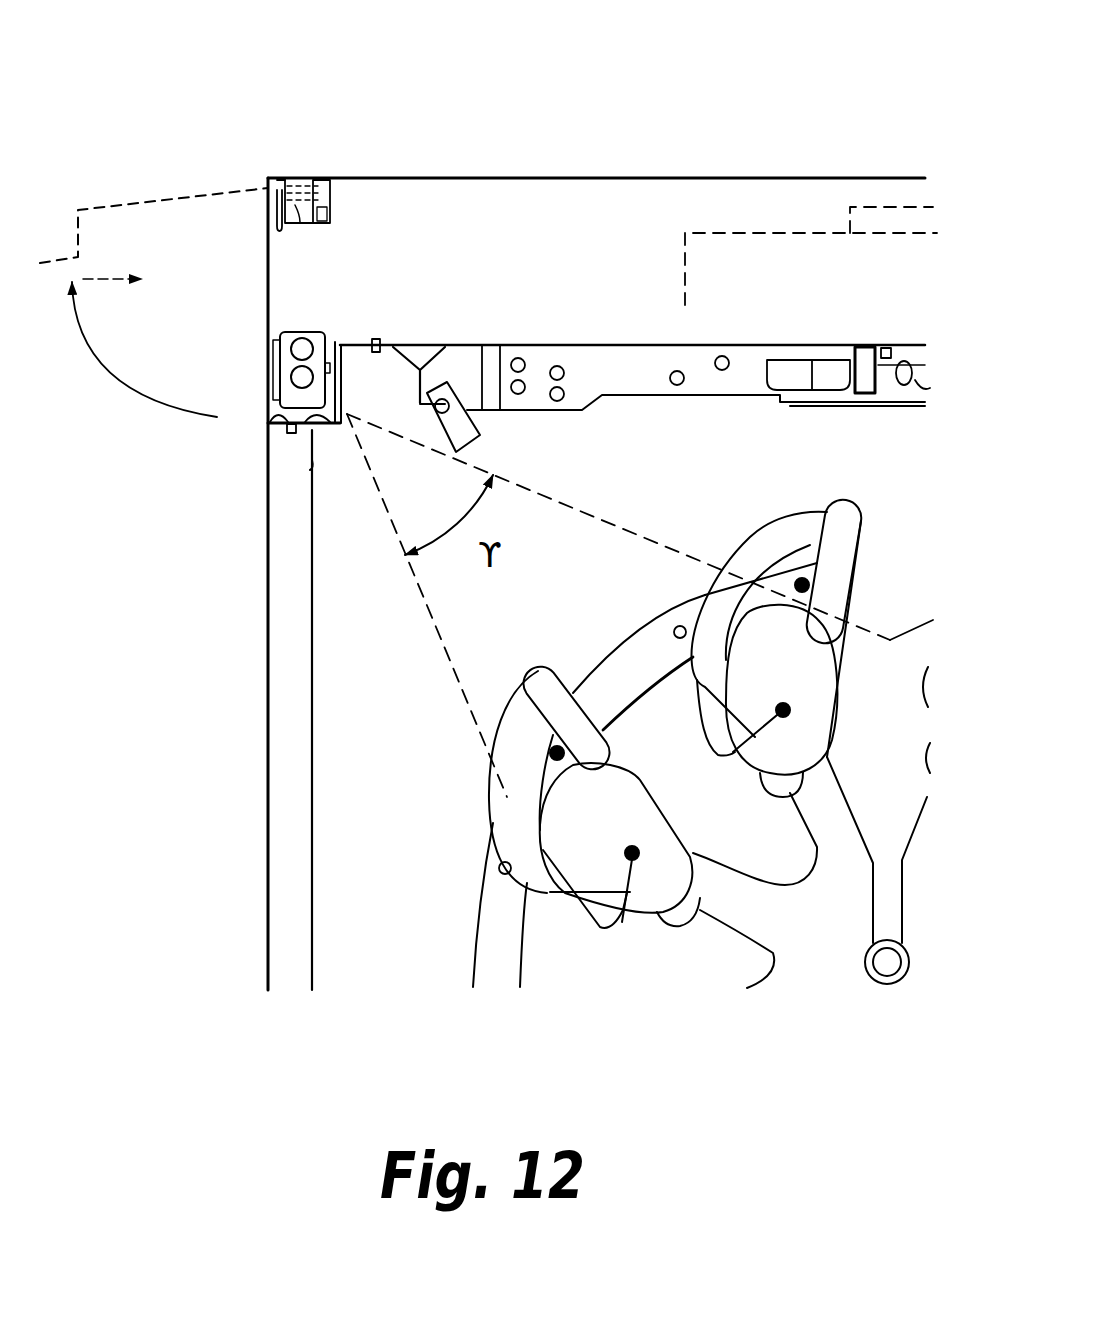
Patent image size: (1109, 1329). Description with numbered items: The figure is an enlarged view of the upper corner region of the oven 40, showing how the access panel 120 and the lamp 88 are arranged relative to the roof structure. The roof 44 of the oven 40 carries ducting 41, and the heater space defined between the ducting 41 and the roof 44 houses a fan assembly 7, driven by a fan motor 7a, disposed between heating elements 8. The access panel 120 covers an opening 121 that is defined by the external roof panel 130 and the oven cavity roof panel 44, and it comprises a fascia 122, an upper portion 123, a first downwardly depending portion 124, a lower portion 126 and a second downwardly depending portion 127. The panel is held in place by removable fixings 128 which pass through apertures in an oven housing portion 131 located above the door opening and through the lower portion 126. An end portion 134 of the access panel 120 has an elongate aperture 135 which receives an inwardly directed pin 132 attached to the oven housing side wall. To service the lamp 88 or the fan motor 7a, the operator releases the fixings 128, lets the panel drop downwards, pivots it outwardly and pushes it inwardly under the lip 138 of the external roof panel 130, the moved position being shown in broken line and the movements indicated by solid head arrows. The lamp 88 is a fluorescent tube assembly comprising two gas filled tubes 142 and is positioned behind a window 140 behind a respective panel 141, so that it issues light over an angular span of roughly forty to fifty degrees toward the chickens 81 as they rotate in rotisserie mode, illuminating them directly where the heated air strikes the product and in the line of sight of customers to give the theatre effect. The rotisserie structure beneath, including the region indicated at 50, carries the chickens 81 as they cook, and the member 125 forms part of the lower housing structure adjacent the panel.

The fan assembly 7 is at (840, 377).
The fan motor 7a is at (750, 252).
The heating element 8 is at (572, 383).
The oven 40 is at (601, 137).
The ducting 41 is at (733, 400).
The roof 44 is at (415, 342).
The arm 50 is at (637, 655).
The chicken 81 is at (520, 820).
The lamp 88 is at (302, 333).
The access panel 120 is at (128, 190).
The opening 121 is at (345, 258).
The fascia 122 is at (317, 270).
The upper portion 123 is at (317, 180).
The first downwardly depending portion 124 is at (328, 208).
The vertical post 125 is at (268, 695).
The lower portion 126 is at (330, 440).
The second downwardly depending portion 127 is at (310, 472).
The removable fixing 128 is at (280, 438).
The external roof panel 130 is at (433, 177).
The oven housing portion 131 is at (268, 416).
The pin 132 is at (278, 180).
The end portion 134 is at (268, 247).
The elongate aperture 135 is at (277, 213).
The lip 138 is at (327, 180).
The window 140 is at (338, 378).
The panel 141 is at (350, 342).
The gas filled tube 142 is at (300, 378).